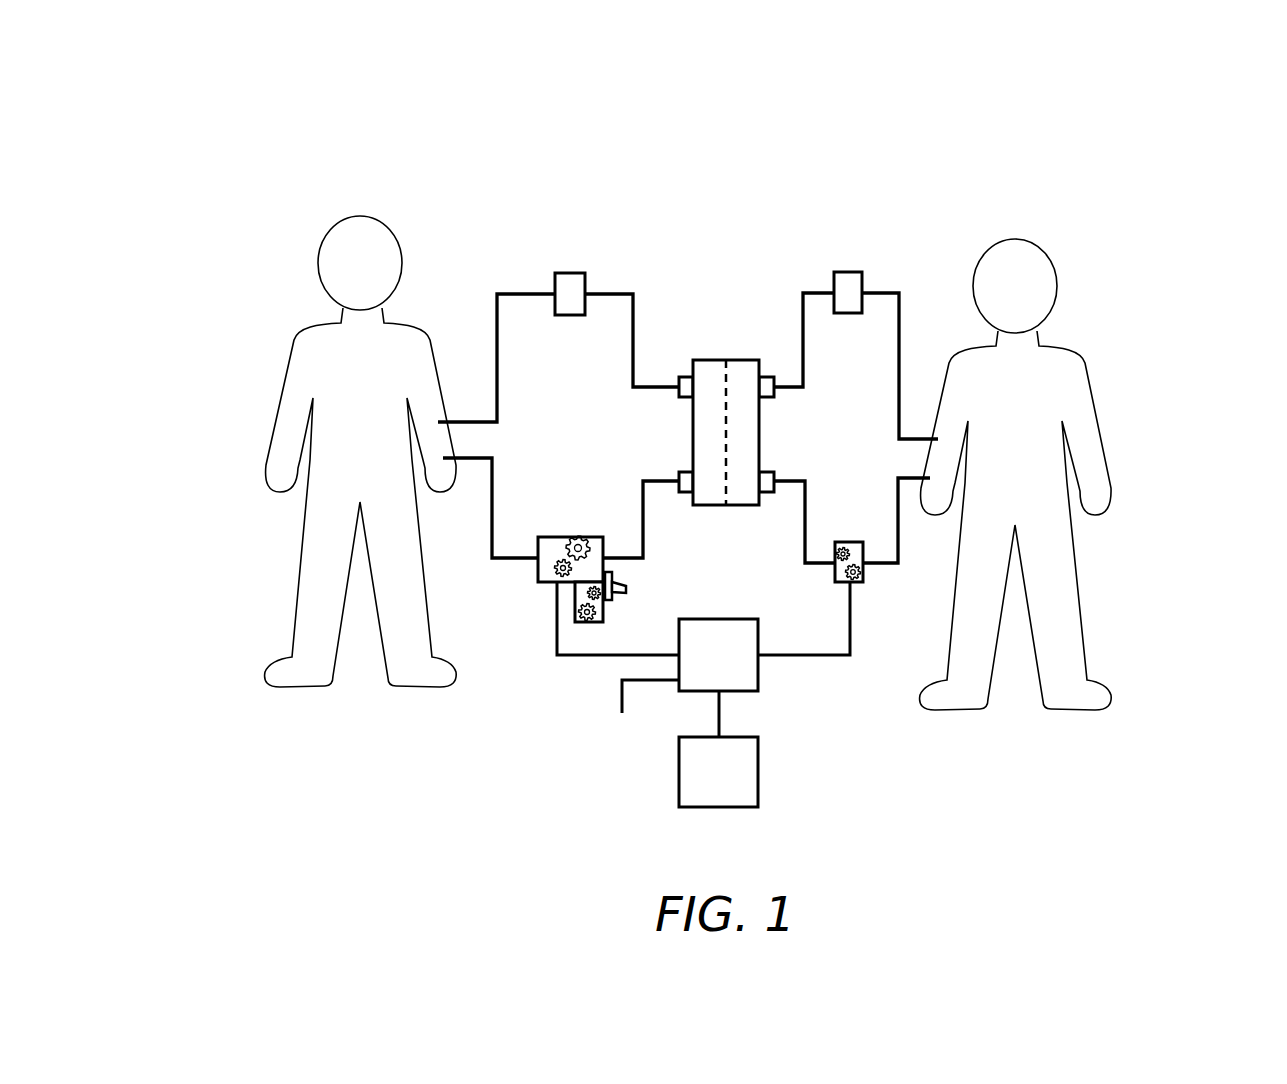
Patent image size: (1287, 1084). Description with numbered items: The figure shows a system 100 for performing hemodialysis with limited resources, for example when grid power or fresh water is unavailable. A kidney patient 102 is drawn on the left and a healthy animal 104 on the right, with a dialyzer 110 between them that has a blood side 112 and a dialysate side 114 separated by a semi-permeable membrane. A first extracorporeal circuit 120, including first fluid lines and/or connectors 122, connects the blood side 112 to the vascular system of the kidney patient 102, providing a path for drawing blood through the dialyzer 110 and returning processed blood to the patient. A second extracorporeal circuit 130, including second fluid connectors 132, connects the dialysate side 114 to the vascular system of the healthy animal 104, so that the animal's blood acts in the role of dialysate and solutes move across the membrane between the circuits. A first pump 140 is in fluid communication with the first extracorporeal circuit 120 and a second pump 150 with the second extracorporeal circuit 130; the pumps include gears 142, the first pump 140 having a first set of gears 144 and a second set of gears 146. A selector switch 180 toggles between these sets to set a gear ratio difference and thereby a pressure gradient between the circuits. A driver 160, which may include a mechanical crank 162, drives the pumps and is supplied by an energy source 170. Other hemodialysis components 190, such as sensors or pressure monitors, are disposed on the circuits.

The system 100 is at (266, 137).
The kidney patient 102 is at (315, 363).
The healthy animal 104 is at (1068, 369).
The dialyzer 110 is at (725, 360).
The blood side 112 is at (700, 428).
The dialysate side 114 is at (747, 436).
The first extracorporeal circuit 120 is at (558, 363).
The first fluid lines and/or connectors 122 is at (622, 294).
The second extracorporeal circuit 130 is at (858, 366).
The second fluid connectors 132 is at (812, 293).
The first pump 140 is at (575, 618).
The gears 142 is at (575, 538).
The first set of gears 144 is at (548, 526).
The second set of gears 146 is at (616, 619).
The second pump 150 is at (858, 583).
The driver 160 is at (718, 655).
The mechanical crank 162 is at (622, 685).
The energy source 170 is at (718, 772).
The selector switch 180 is at (627, 586).
The hemodialysis components 190 is at (565, 273).